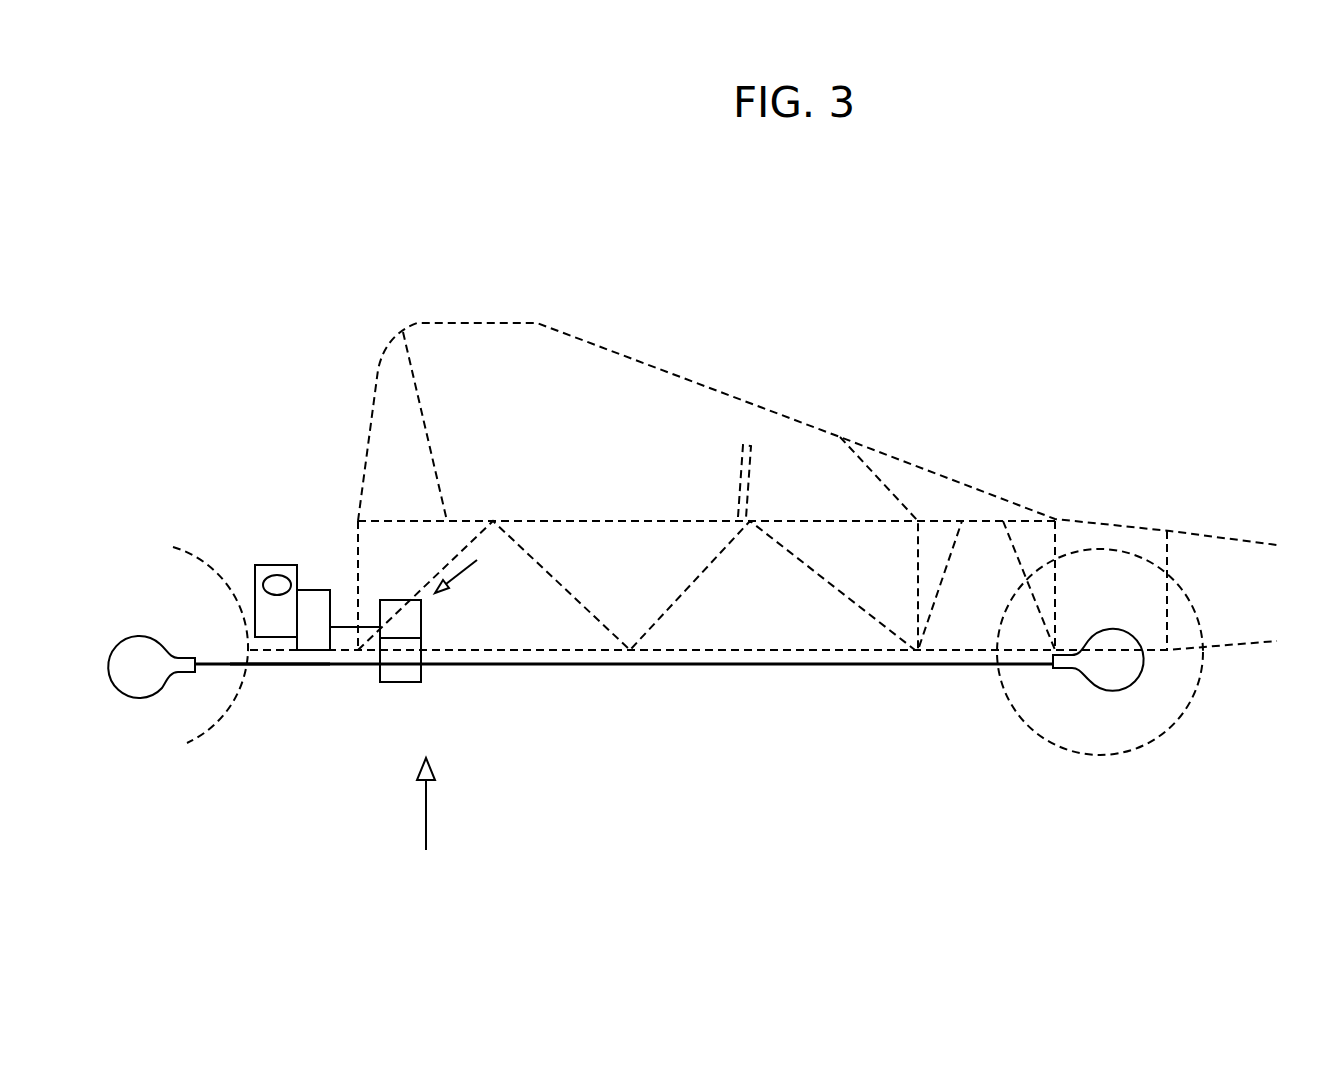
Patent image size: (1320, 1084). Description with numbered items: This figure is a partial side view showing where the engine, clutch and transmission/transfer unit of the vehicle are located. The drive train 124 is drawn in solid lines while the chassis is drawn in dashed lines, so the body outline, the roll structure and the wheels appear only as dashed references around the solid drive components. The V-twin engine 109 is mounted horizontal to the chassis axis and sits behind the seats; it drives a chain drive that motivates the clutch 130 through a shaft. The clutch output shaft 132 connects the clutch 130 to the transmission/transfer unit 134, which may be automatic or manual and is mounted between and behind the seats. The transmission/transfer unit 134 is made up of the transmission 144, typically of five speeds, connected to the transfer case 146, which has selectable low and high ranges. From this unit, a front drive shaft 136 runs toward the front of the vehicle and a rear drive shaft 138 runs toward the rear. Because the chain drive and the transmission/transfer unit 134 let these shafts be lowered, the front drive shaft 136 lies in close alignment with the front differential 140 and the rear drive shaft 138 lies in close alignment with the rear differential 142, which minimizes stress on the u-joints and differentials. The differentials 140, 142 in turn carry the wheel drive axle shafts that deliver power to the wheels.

The V-twin engine 109 is at (272, 565).
The clutch 130 is at (310, 590).
The clutch output shaft 132 is at (337, 625).
The transmission/transfer unit 134 is at (475, 575).
The transmission 144 is at (421, 620).
The transfer case 146 is at (412, 677).
The drive train 124 is at (425, 827).
The front drive shaft 136 is at (853, 661).
The rear drive shaft 138 is at (272, 663).
The rear differential 142 is at (157, 687).
The front differential 140 is at (1088, 682).